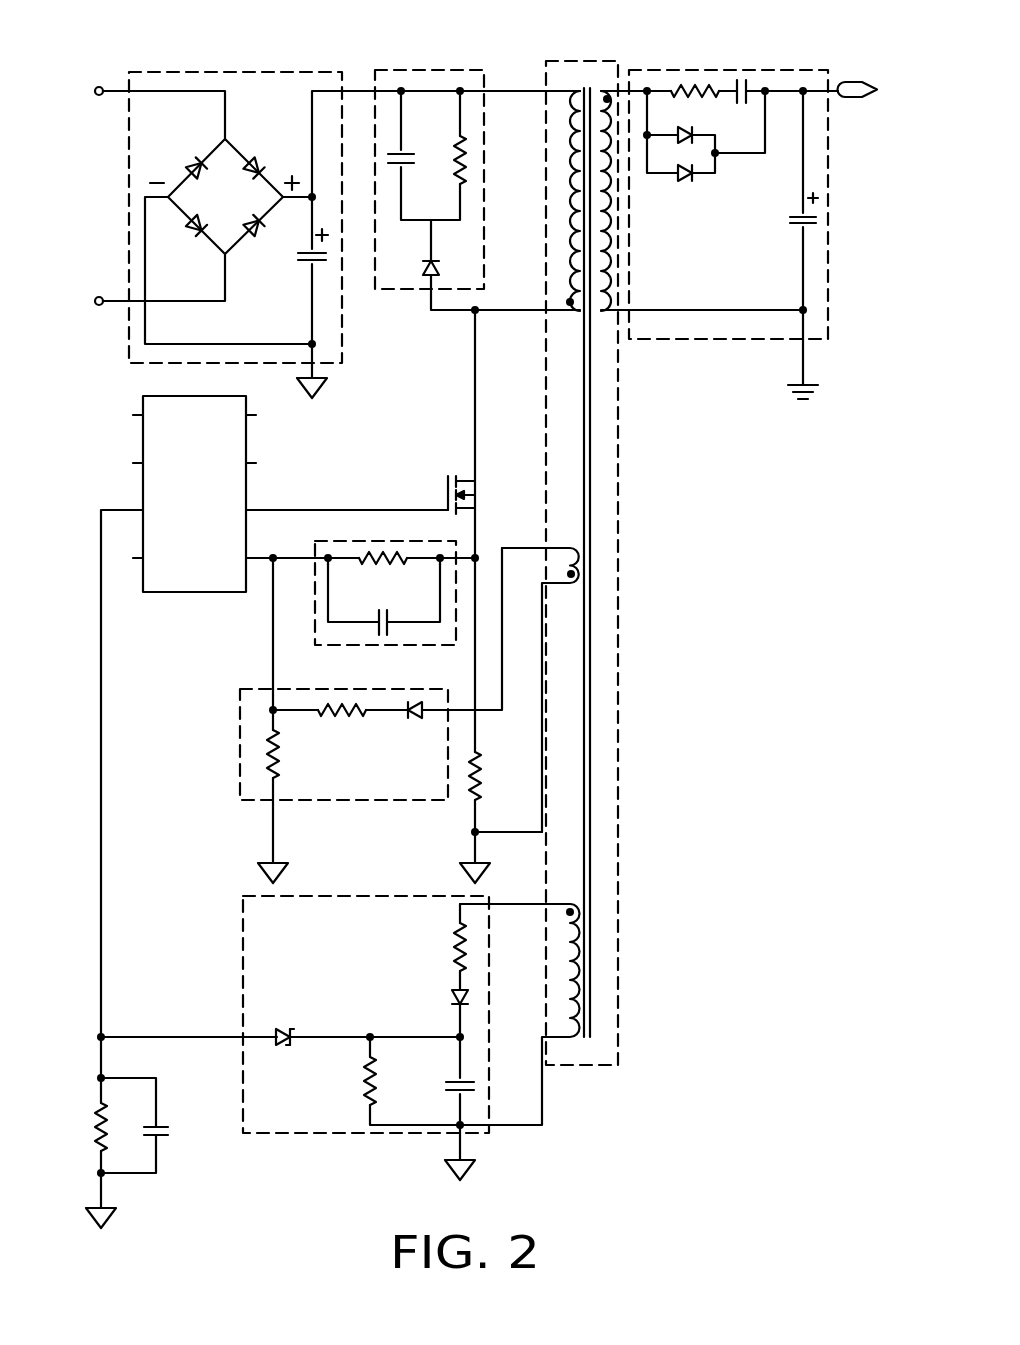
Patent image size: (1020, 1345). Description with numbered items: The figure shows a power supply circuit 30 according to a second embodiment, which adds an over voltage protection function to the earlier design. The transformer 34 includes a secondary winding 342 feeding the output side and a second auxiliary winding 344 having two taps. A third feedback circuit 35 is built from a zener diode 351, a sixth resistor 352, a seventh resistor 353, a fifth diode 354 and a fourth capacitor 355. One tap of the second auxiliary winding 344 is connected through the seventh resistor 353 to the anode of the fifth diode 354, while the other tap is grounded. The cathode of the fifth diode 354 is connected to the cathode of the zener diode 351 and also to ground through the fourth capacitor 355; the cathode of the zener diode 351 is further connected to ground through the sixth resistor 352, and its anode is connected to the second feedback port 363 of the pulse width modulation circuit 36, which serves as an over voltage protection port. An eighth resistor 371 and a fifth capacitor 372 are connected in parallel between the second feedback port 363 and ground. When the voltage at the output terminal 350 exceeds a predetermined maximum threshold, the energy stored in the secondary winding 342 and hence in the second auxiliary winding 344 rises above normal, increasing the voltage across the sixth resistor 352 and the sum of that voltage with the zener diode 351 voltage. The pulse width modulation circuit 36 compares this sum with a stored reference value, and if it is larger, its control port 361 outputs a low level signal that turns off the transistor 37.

The power supply circuit 30 is at (504, 33).
The transformer 34 is at (618, 968).
The secondary winding 342 is at (608, 286).
The second auxiliary winding 344 is at (572, 1007).
The output terminal 350 is at (855, 86).
The third feedback circuit 35 is at (242, 930).
The zener diode 351 is at (280, 1027).
The sixth resistor 352 is at (363, 1093).
The seventh resistor 353 is at (457, 962).
The fifth diode 354 is at (453, 998).
The fourth capacitor 355 is at (447, 1087).
The pulse width modulation circuit 36 is at (142, 445).
The control port 361 is at (246, 510).
The second feedback port 363 is at (143, 510).
The transistor 37 is at (478, 487).
The eighth resistor 371 is at (107, 1147).
The fifth capacitor 372 is at (175, 1132).